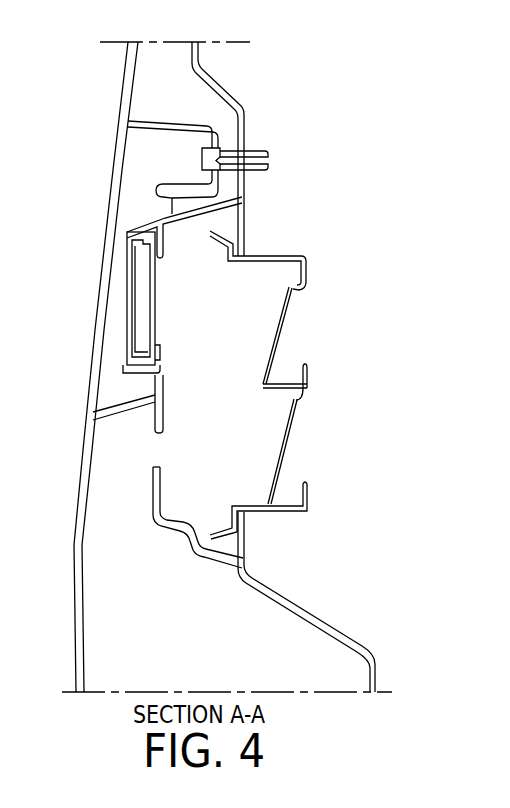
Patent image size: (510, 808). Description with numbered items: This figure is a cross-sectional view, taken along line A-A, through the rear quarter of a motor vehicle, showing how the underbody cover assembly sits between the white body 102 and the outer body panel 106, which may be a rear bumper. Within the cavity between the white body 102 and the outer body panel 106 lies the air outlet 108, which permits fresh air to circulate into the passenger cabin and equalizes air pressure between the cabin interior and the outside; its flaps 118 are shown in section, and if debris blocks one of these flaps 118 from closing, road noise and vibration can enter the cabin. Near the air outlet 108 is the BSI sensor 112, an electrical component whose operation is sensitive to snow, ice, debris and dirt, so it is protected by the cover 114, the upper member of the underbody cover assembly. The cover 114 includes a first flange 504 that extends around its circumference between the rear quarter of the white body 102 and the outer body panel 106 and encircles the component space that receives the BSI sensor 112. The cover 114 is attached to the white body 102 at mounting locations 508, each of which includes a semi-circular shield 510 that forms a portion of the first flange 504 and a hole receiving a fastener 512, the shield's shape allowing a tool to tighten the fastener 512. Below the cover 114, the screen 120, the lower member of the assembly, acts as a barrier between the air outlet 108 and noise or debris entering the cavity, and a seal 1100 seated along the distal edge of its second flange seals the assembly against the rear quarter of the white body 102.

The white body 102 is at (233, 97).
The outer body panel 106 is at (122, 90).
The air outlet 108 is at (304, 385).
The BSI sensor 112 is at (127, 276).
The cover 114 is at (171, 144).
The flaps 118 is at (285, 328).
The screen 120 is at (153, 490).
The first flange 504 is at (113, 413).
The mounting locations 508 is at (222, 147).
The semi-circular shield 510 is at (189, 126).
The fastener 512 is at (268, 158).
The seal 1100 is at (244, 560).